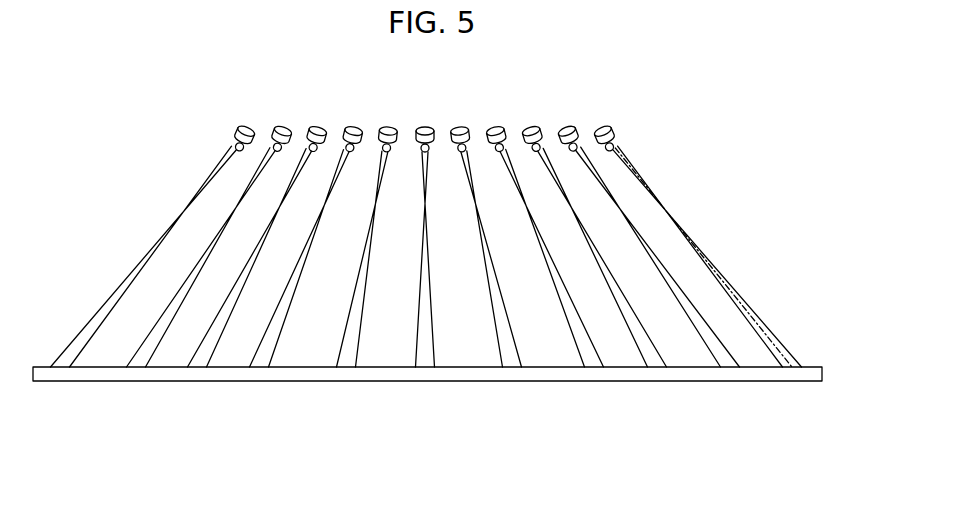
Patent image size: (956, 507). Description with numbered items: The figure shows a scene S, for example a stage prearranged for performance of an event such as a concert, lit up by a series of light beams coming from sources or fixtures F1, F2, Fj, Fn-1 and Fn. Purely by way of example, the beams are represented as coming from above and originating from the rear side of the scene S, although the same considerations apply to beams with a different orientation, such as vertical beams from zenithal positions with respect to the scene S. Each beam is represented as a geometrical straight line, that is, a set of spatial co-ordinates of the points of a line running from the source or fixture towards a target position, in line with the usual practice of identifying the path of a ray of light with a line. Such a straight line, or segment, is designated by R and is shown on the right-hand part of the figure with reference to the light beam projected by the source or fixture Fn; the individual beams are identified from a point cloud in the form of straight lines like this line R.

The source or fixture F1 is at (233, 146).
The source or fixture F2 is at (274, 147).
The source or fixture Fj is at (384, 147).
The source or fixture Fn-1 is at (580, 146).
The source or fixture Fn is at (618, 146).
The straight line R is at (697, 249).
The scene S is at (388, 373).